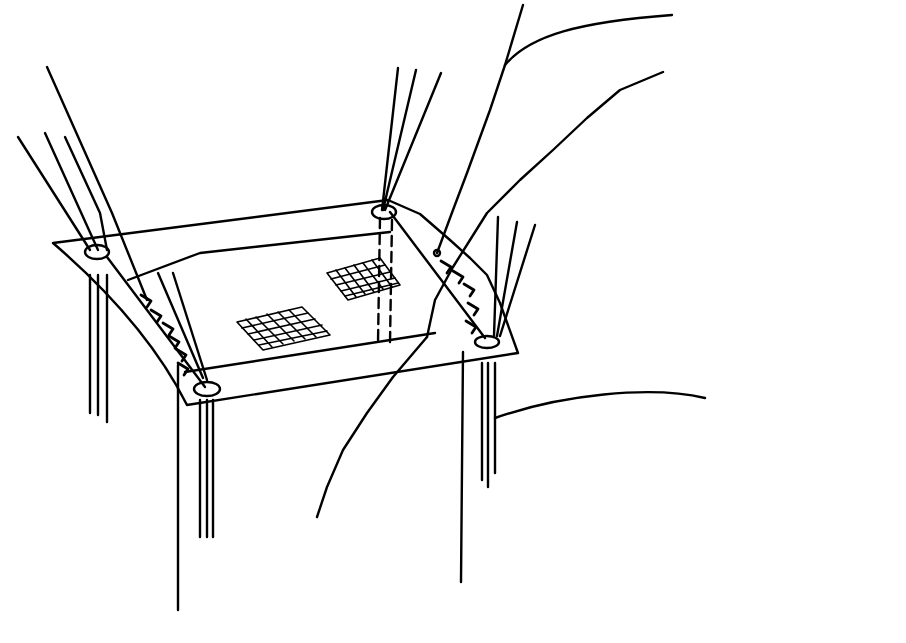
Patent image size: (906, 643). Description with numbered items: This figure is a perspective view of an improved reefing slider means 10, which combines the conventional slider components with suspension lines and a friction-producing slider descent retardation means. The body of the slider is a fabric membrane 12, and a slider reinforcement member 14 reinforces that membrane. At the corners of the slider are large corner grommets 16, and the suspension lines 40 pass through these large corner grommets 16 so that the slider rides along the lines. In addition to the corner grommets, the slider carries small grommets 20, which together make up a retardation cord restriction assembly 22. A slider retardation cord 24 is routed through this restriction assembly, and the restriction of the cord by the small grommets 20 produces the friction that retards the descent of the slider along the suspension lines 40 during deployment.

The reefing slider means 10 is at (290, 200).
The fabric membrane 12 is at (470, 285).
The slider reinforcement member 14 is at (440, 353).
The large corner grommet 16 is at (492, 342).
The small grommets 20 is at (593, 193).
The retardation cord restriction assembly 22 is at (403, 286).
The slider retardation cord 24 is at (630, 32).
The suspension lines 40 is at (647, 407).